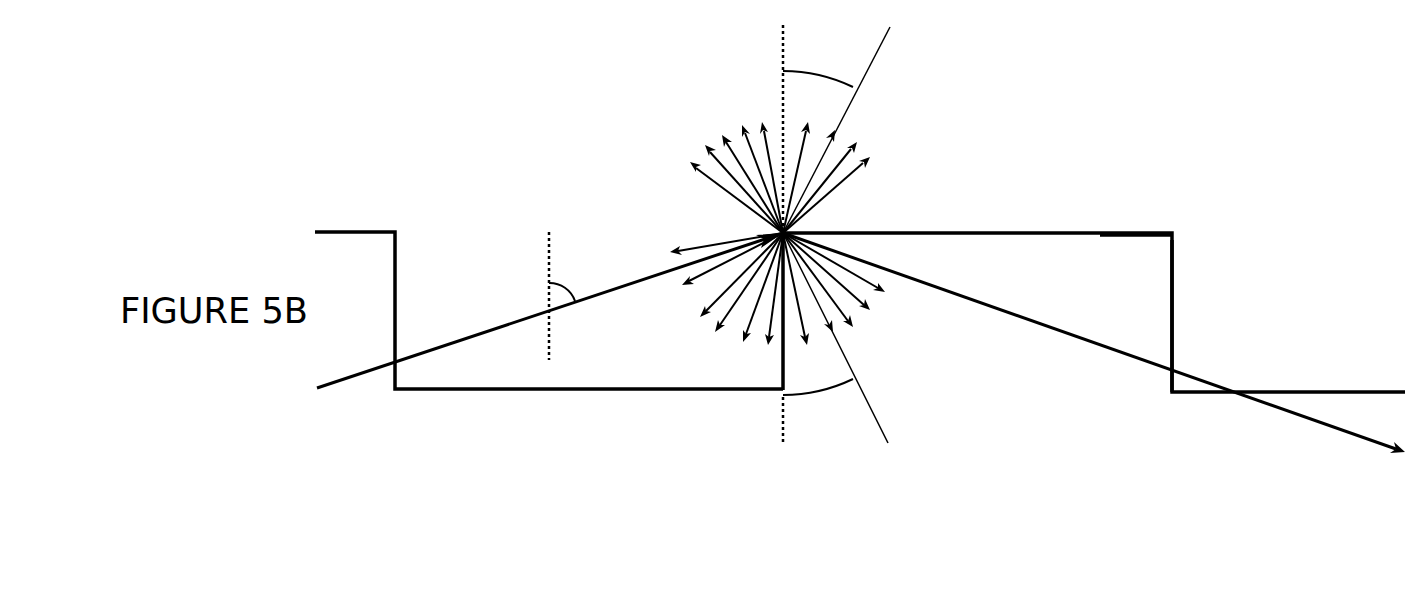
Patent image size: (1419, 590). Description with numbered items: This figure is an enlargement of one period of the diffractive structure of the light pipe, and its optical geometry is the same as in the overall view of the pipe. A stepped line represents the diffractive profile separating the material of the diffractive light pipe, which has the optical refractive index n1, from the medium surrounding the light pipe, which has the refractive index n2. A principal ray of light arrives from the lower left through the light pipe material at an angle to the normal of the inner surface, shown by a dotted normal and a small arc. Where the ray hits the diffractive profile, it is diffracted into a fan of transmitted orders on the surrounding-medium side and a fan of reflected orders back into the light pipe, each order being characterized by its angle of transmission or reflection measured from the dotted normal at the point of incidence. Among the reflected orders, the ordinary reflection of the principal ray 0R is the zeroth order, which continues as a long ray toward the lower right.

The ordinary reflection of the principal ray 0R is at (1094, 343).
The refractive index of the surrounding medium n2 is at (1136, 209).
The optical refractive index of the diffractive light pipe n1 is at (1150, 313).